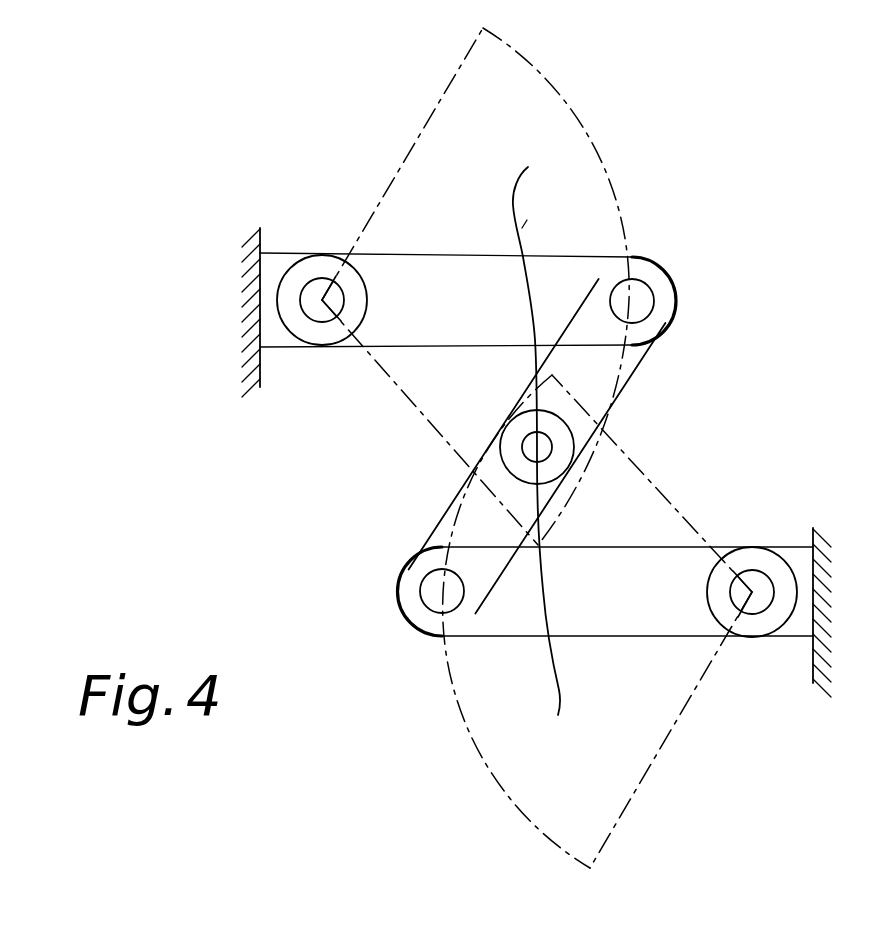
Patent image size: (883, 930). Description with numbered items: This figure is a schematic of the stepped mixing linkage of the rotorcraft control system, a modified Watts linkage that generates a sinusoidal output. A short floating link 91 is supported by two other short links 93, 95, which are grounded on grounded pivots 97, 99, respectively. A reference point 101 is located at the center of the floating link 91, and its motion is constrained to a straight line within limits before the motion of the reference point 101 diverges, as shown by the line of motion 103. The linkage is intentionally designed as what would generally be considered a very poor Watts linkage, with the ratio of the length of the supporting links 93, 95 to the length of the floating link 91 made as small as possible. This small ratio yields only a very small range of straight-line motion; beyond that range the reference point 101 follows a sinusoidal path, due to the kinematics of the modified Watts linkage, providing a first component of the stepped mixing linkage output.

The short floating link 91 is at (440, 512).
The short link 93 is at (427, 256).
The short link 95 is at (603, 636).
The grounded pivot 97 is at (296, 254).
The grounded pivot 99 is at (778, 636).
The reference point 101 is at (537, 447).
The line of motion 103 is at (558, 715).